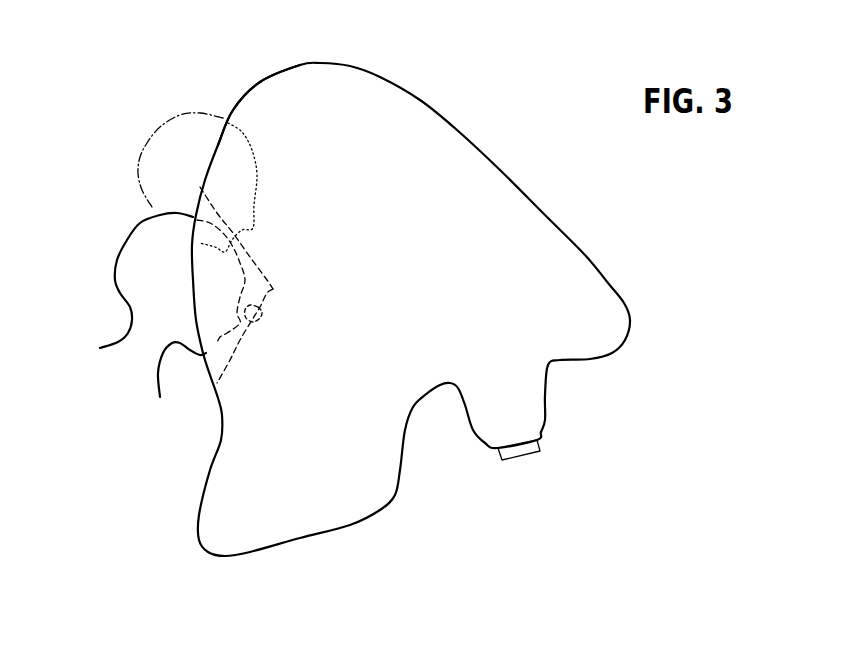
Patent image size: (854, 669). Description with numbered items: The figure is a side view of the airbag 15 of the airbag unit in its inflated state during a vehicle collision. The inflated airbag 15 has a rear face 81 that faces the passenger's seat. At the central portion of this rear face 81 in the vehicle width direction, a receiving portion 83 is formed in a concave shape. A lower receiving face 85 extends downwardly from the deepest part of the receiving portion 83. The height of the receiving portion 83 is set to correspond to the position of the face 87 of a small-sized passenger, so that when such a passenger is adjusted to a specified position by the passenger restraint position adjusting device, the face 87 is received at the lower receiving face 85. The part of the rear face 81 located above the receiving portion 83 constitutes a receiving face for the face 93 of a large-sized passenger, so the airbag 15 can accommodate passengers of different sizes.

The airbag 15 is at (380, 77).
The rear face 81 is at (233, 107).
The receiving portion 83 is at (273, 289).
The lower receiving face 85 is at (262, 312).
The face of a small-sized passenger 87 is at (113, 262).
The face of a large-sized passenger 93 is at (138, 153).